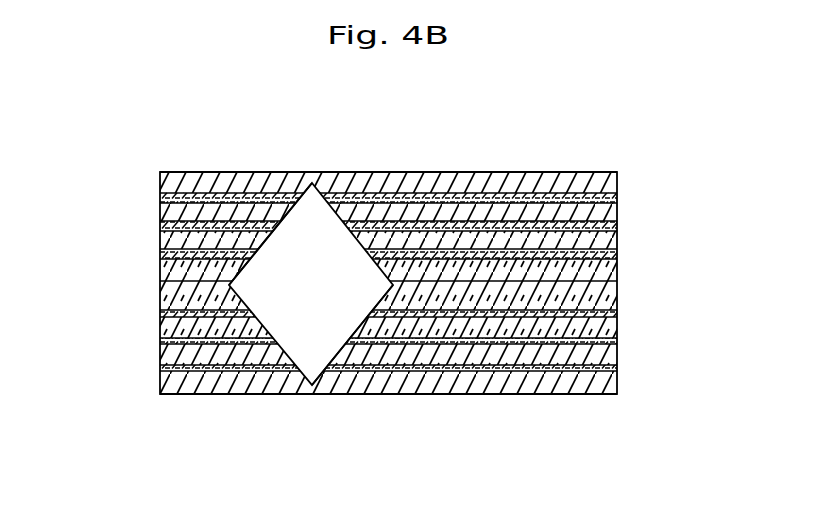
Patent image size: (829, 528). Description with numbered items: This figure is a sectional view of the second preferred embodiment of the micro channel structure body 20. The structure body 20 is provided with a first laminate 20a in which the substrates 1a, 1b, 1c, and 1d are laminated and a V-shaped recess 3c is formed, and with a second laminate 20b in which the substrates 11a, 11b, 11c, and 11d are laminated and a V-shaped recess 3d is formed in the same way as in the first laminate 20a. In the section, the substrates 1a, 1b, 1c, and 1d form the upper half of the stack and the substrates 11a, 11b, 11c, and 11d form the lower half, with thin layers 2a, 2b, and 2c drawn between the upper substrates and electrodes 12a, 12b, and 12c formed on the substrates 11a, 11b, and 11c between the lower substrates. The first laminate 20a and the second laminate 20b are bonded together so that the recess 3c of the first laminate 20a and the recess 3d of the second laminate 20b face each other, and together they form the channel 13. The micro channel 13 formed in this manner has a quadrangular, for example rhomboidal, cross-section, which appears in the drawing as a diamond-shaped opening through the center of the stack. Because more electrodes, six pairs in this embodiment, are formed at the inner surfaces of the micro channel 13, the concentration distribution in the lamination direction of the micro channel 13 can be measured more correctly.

The substrate 1a is at (610, 183).
The substrate 1b is at (607, 213).
The substrate 1c is at (607, 243).
The substrate 1d is at (607, 270).
The adhesive layer 2a is at (160, 198).
The adhesive layer 2b is at (160, 225).
The adhesive layer 2c is at (160, 255).
The V-shaped recess 3c is at (290, 230).
The V-shaped recess 3d is at (327, 318).
The substrate 11a is at (160, 386).
The substrate 11b is at (160, 353).
The substrate 11c is at (160, 328).
The substrate 11d is at (160, 298).
The electrode 12a is at (612, 367).
The electrode 12b is at (612, 340).
The electrode 12c is at (612, 311).
The channel 13 is at (313, 352).
The micro channel structure body 20 is at (512, 138).
The first laminate 20a is at (591, 152).
The second laminate 20b is at (557, 412).